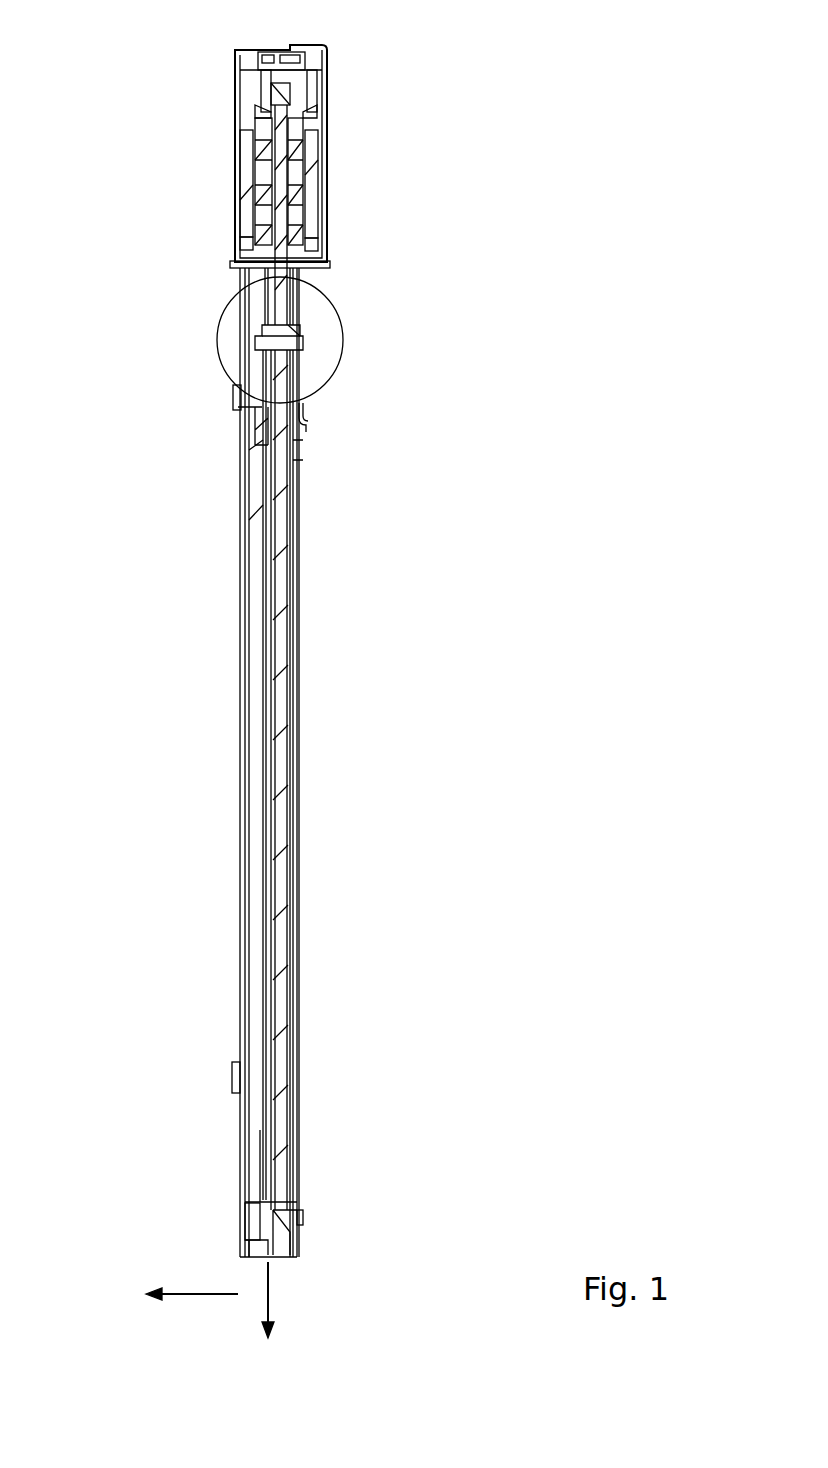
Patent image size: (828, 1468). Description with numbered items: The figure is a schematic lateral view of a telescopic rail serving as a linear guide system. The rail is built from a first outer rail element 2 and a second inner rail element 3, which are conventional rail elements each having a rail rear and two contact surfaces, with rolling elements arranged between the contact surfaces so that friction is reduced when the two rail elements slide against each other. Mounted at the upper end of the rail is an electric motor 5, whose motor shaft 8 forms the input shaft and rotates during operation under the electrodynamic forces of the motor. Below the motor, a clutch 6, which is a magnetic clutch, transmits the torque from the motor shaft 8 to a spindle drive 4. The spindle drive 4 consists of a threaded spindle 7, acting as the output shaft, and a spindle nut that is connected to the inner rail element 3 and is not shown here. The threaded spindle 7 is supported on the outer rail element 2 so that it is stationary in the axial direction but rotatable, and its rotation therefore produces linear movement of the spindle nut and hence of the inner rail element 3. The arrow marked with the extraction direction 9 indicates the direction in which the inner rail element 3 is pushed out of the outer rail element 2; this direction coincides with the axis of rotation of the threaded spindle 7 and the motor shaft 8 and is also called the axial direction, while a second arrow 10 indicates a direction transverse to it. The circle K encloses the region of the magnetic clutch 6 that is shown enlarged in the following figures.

The first outer rail element 2 is at (298, 586).
The second inner rail element 3 is at (243, 473).
The spindle drive 4 is at (283, 557).
The electric motor 5 is at (310, 180).
The clutch 6 is at (318, 332).
The threaded spindle 7 is at (300, 393).
The motor shaft 8 is at (282, 292).
The extraction direction 9 is at (268, 1297).
The lateral movement direction 10 is at (197, 1294).
The circle K is at (222, 375).